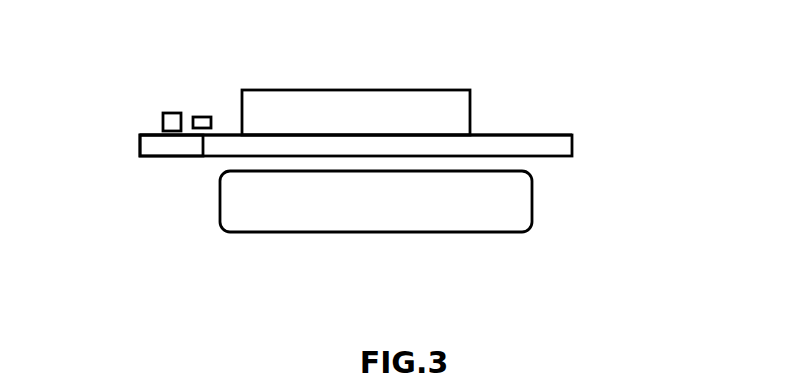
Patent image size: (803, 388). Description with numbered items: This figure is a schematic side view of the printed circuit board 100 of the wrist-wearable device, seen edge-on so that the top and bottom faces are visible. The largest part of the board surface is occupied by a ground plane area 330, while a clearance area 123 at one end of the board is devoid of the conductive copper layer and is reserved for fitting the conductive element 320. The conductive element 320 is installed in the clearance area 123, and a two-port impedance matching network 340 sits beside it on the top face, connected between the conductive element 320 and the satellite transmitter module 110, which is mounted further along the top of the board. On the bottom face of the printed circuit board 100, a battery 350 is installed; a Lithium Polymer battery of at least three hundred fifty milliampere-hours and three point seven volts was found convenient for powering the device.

The printed circuit board 100 is at (572, 148).
The satellite transmitter module 110 is at (458, 109).
The clearance area 123 is at (155, 147).
The conductive element 320 is at (172, 127).
The ground plane area 330 is at (555, 135).
The two-port impedance matching network 340 is at (203, 117).
The battery 350 is at (532, 198).